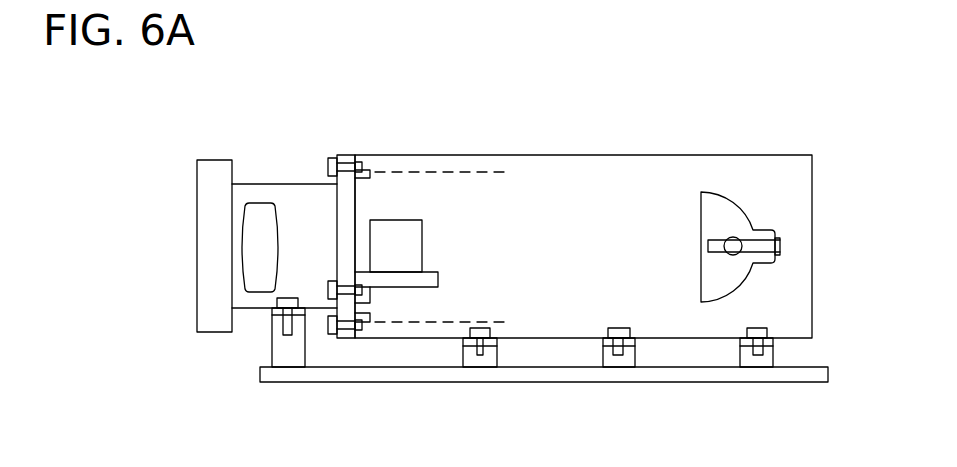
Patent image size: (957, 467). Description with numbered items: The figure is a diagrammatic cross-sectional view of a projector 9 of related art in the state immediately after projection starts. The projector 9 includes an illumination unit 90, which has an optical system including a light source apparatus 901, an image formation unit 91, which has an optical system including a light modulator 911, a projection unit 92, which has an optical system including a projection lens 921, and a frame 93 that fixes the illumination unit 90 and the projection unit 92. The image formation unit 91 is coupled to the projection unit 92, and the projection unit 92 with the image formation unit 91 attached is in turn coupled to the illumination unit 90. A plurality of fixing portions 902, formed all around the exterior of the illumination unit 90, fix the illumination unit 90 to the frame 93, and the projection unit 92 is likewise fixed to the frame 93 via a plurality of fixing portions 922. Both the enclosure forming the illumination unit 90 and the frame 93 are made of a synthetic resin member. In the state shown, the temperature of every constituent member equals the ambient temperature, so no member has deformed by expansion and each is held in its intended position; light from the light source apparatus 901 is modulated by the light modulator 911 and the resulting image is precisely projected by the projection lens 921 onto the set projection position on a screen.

The projector 9 is at (802, 113).
The illumination unit 90 is at (597, 155).
The light source apparatus 901 is at (735, 202).
The fixing portions 902 is at (497, 341).
The image formation unit 91 is at (396, 246).
The light modulator 911 is at (422, 243).
The projection unit 92 is at (280, 184).
The projection lens 921 is at (260, 202).
The fixing portions 922 is at (272, 316).
The frame 93 is at (657, 382).